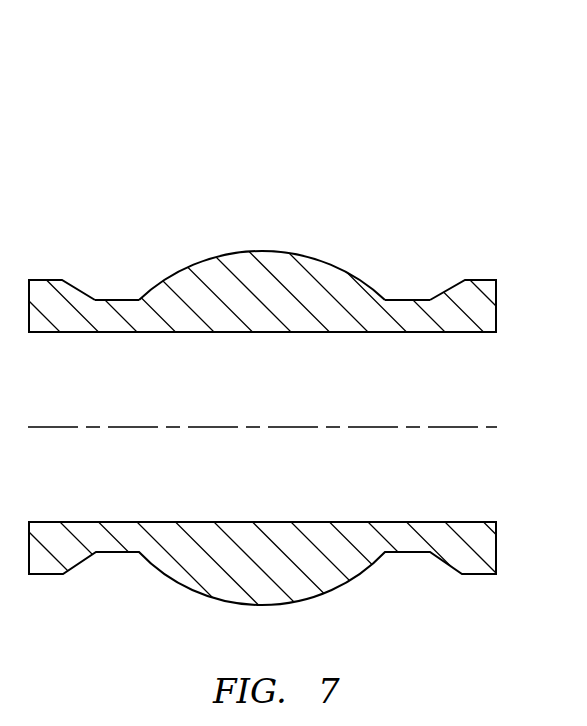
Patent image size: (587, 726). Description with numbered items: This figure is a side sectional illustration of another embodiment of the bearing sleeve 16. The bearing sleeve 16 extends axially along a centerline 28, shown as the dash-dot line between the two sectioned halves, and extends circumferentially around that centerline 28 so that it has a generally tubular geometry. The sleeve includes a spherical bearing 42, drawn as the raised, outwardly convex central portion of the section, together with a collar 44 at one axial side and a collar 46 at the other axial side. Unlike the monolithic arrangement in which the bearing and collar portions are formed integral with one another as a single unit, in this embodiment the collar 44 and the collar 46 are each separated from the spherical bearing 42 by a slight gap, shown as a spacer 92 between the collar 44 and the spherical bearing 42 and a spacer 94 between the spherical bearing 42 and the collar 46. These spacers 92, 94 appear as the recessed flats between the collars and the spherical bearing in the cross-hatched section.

The bearing sleeve 16 is at (288, 325).
The centerline 28 is at (477, 428).
The spherical bearing 42 is at (276, 238).
The collar 44 is at (47, 278).
The collar 46 is at (481, 272).
The spacer 92 is at (118, 299).
The spacer 94 is at (409, 288).